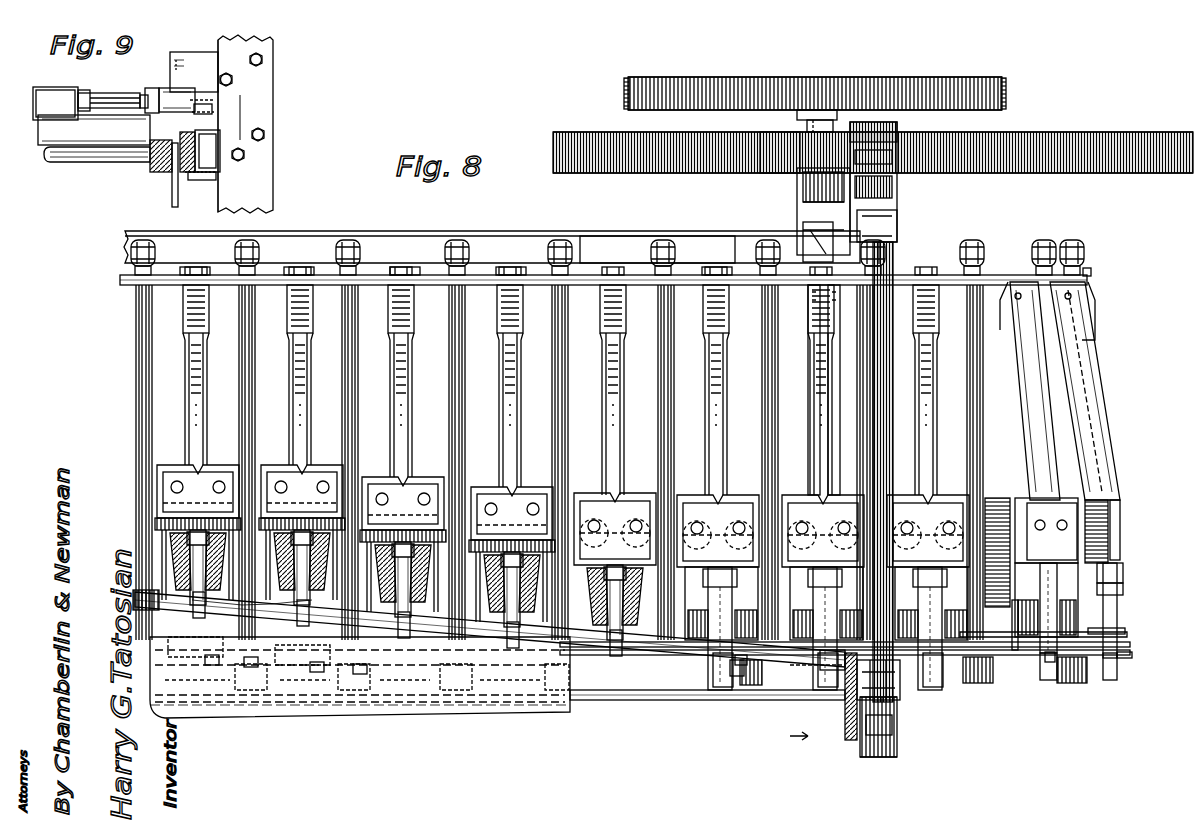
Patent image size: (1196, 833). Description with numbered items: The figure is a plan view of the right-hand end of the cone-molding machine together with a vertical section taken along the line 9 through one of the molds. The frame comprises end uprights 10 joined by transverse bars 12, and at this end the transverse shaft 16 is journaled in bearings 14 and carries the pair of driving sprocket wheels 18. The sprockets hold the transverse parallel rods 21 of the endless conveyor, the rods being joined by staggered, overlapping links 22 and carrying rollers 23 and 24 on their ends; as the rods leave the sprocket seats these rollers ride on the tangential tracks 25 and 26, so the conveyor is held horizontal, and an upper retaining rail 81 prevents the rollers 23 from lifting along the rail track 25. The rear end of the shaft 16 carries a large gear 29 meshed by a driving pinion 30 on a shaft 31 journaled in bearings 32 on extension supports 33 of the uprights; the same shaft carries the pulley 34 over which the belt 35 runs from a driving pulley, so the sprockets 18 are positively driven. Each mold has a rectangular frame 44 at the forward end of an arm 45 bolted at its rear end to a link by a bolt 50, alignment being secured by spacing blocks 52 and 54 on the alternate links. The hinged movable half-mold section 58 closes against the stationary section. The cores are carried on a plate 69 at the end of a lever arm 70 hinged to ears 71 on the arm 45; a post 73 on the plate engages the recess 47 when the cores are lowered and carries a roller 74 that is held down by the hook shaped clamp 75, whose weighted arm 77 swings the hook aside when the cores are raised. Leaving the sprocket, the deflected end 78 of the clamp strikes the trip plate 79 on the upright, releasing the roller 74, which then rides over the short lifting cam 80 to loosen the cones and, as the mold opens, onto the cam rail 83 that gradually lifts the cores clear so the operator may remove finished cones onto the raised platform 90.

In FIG. 8, the section line 9— 9 is at (812, 588).
In FIG. 9, the uprights 10 is at (262, 108).
In FIG. 9, the transverse bars 12 is at (220, 134).
In FIG. 8, the transverse bars 12 is at (662, 700).
In FIG. 8, the bearings 14 is at (898, 230).
In FIG. 8, the transverse shaft 16 is at (894, 262).
In FIG. 8, the driving sprocket wheels 18 is at (760, 280).
In FIG. 9, the transverse parallel rods 21 is at (112, 158).
In FIG. 8, the transverse parallel rods 21 is at (152, 372).
In FIG. 9, the links 22 is at (158, 164).
In FIG. 8, the links 22 is at (226, 288).
In FIG. 9, the rollers 23 is at (190, 174).
In FIG. 8, the rollers 23 is at (268, 692).
In FIG. 8, the rollers 24 is at (156, 254).
In FIG. 9, the track 25 is at (216, 176).
In FIG. 8, the track 25 is at (440, 716).
In FIG. 8, the track 26 is at (470, 232).
In FIG. 8, the large gear 29 is at (692, 172).
In FIG. 8, the driving pinion 30 is at (798, 190).
In FIG. 8, the pinion shaft 31 is at (780, 168).
In FIG. 8, the bearings 32 is at (800, 214).
In FIG. 8, the extension supports 33 is at (892, 190).
In FIG. 8, the pulley 34 is at (752, 88).
In FIG. 8, the belt 35 is at (624, 92).
In FIG. 9, the rectangular frame 44 is at (94, 130).
In FIG. 8, the rectangular frame 44 is at (170, 660).
In FIG. 8, the arm 45 is at (1030, 428).
In FIG. 9, the recess 47 is at (150, 86).
In FIG. 8, the recess 47 is at (212, 652).
In FIG. 8, the bolt 50 is at (296, 268).
In FIG. 8, the spacing blocks 52 is at (290, 280).
In FIG. 8, the spacing blocks 54 is at (186, 280).
In FIG. 8, the movable half-mold section 58 is at (402, 596).
In FIG. 9, the plate 69 is at (55, 103).
In FIG. 8, the plate 69 is at (208, 468).
In FIG. 8, the lever arm 70 is at (200, 432).
In FIG. 8, the ears 71 is at (1012, 310).
In FIG. 9, the post 73 is at (104, 100).
In FIG. 8, the post 73 is at (1124, 608).
In FIG. 9, the roller 74 is at (142, 94).
In FIG. 8, the roller 74 is at (300, 668).
In FIG. 9, the hook shaped clamp 75 is at (190, 92).
In FIG. 9, the weighted arm 77 is at (172, 190).
In FIG. 9, the upper deflected end 78 is at (178, 60).
In FIG. 8, the upper deflected end 78 is at (1140, 662).
In FIG. 9, the trip plate or cam 79 is at (194, 72).
In FIG. 8, the trip plate or cam 79 is at (838, 700).
In FIG. 9, the lifting cam 80 is at (213, 102).
In FIG. 8, the lifting cam 80 is at (818, 686).
In FIG. 9, the retaining rail 81 is at (212, 110).
In FIG. 8, the retaining rail 81 is at (714, 690).
In FIG. 8, the cam rail 83 is at (430, 650).
In FIG. 8, the raised platform 90 is at (508, 724).